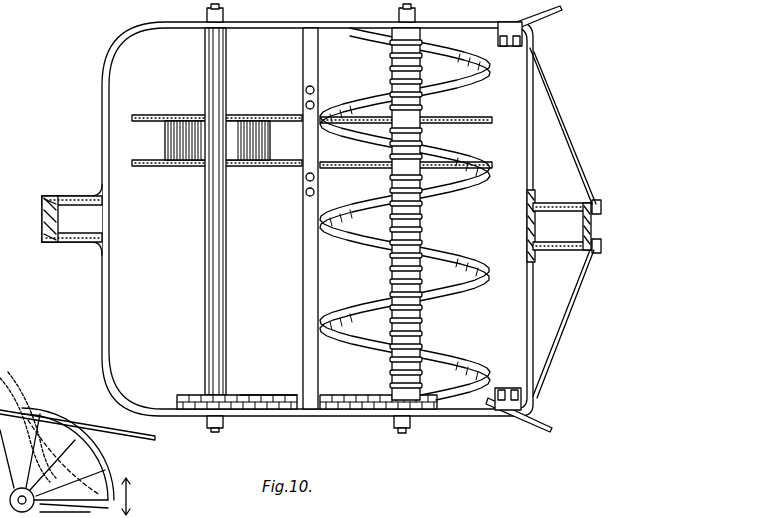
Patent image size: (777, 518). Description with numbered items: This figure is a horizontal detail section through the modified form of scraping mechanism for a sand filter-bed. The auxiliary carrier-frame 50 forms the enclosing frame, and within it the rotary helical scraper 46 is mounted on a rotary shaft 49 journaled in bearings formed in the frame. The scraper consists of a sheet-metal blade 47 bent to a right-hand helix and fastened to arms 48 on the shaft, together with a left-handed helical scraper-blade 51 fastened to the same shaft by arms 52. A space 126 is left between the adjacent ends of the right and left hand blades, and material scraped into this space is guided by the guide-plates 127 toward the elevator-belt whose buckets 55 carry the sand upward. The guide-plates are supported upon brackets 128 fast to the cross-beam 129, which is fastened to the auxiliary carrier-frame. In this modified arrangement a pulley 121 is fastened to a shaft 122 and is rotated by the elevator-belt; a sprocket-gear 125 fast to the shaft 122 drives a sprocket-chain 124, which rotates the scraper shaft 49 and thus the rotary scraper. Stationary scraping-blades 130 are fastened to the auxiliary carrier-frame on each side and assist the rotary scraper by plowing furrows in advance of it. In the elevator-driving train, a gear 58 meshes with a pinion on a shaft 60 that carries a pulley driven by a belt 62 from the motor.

The rotary helical scraper 46 is at (432, 214).
The sheet-metal blade 47 is at (374, 238).
The arms 48 is at (430, 262).
The rotary shaft 49 is at (416, 18).
The auxiliary carrier-frame 50 is at (48, 217).
The left-handed helical scraper-blade 51 is at (470, 72).
The arms 52 is at (392, 62).
The buckets 55 is at (57, 418).
The gear 58 is at (18, 388).
The shaft 60 is at (85, 498).
The belt 62 is at (152, 439).
The pulley 121 is at (175, 168).
The shaft 122 is at (224, 322).
The sprocket-chain 124 is at (268, 395).
The sprocket-gear 125 is at (228, 411).
The space 126 is at (455, 150).
The guide-plates 127 is at (290, 162).
The brackets 128 is at (304, 93).
The cross-beam 129 is at (303, 268).
The stationary scraping-blades 130 is at (556, 12).